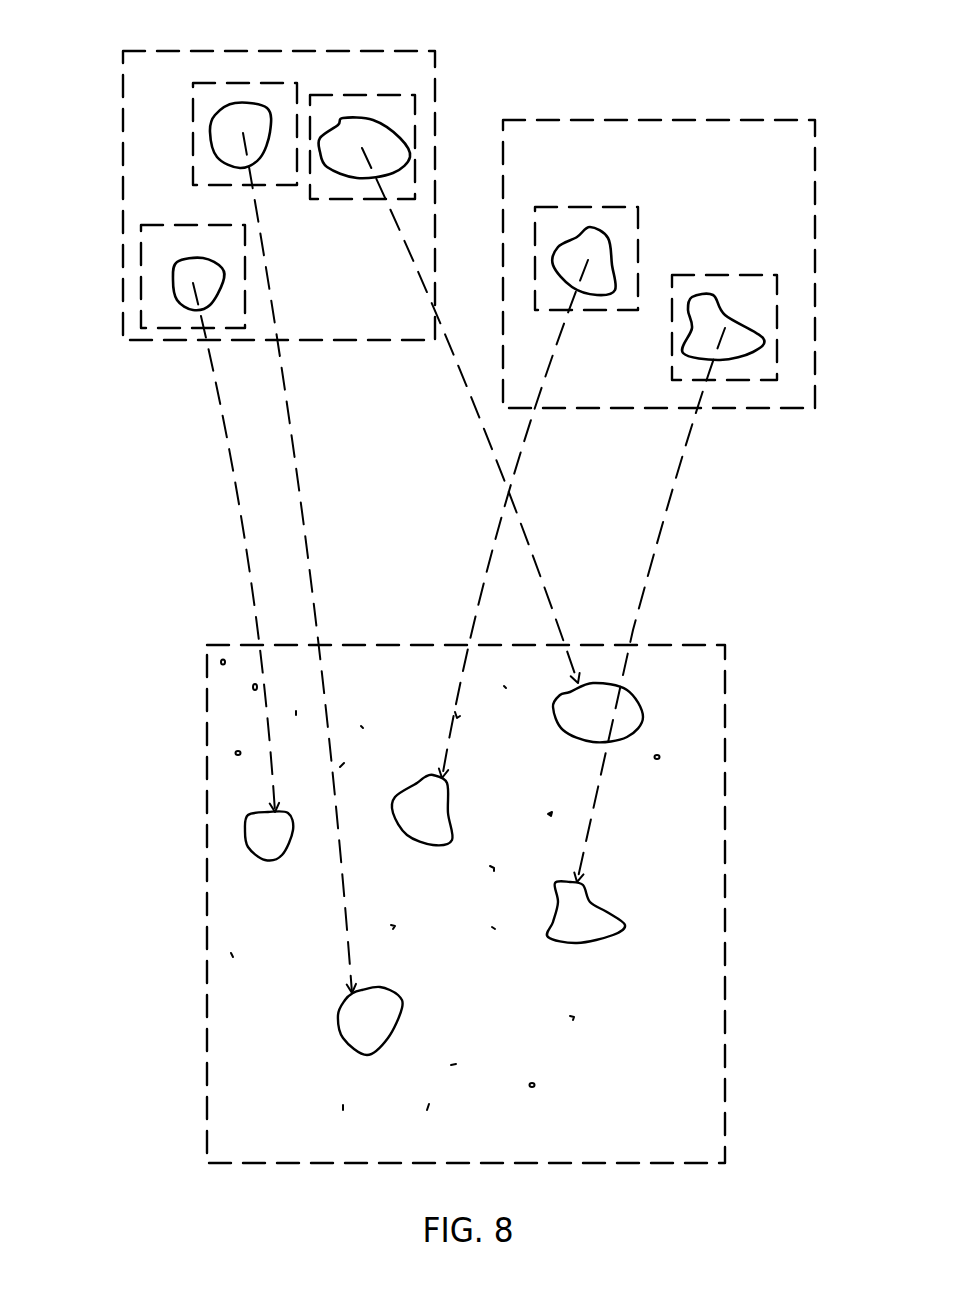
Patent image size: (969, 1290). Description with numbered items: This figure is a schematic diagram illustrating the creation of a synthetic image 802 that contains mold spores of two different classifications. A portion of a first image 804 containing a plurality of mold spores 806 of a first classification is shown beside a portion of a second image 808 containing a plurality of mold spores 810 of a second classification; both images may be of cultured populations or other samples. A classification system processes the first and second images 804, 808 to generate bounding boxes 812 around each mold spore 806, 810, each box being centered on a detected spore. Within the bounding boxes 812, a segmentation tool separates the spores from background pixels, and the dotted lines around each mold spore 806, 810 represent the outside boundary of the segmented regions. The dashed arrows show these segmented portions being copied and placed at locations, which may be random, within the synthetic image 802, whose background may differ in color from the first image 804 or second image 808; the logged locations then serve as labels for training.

The synthetic image 802 is at (205, 977).
The first image 804 is at (435, 95).
The mold spores 806 is at (240, 83).
The second image 808 is at (658, 120).
The mold spores 810 is at (587, 207).
The bounding boxes 812 is at (193, 135).